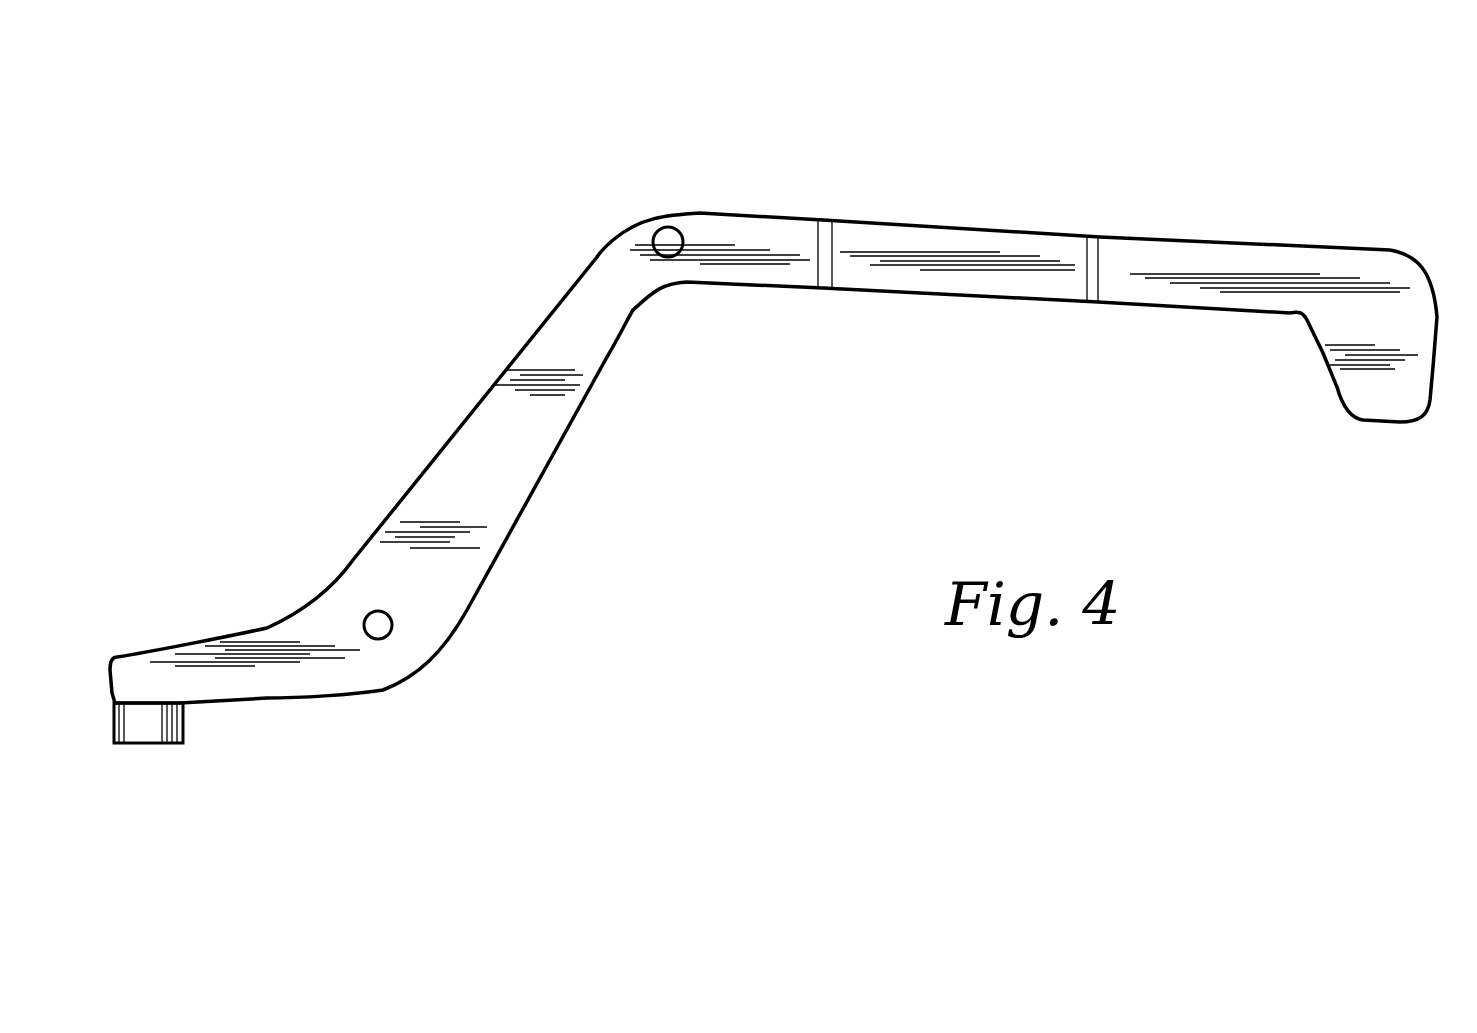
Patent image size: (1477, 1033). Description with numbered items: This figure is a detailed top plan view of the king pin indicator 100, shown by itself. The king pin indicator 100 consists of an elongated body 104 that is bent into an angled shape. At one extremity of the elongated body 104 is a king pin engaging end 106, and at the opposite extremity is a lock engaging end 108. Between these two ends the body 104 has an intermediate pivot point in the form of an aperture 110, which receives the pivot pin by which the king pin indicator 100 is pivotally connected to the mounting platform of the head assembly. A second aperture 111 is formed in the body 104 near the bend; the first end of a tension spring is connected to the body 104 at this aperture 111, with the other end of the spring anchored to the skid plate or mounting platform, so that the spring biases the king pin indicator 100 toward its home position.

The king pin indicator 100 is at (370, 318).
The elongated body 104 is at (513, 435).
The king pin engaging end 106 is at (152, 744).
The lock engaging end 108 is at (1347, 297).
The aperture 110 is at (382, 623).
The aperture 111 is at (667, 227).